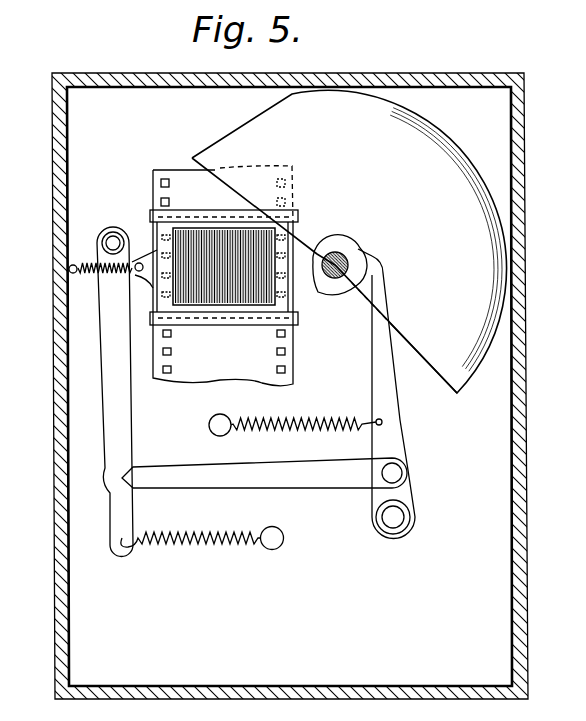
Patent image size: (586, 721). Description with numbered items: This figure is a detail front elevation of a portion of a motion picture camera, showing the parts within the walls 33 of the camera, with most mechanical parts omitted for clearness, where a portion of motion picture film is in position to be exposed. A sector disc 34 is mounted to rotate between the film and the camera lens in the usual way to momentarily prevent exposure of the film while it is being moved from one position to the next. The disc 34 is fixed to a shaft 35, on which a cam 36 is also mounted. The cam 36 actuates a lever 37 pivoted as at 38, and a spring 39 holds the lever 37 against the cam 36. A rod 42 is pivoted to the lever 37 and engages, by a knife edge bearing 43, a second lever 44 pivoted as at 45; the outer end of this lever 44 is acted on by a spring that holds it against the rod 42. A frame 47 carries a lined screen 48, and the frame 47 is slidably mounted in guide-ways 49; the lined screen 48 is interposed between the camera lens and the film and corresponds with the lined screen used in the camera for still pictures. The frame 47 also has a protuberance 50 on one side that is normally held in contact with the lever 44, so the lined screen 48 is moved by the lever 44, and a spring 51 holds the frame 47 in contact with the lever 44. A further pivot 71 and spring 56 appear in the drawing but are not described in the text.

The portion of the camera 33 is at (525, 330).
The sector disc 34 is at (463, 362).
The shaft 35 is at (340, 262).
The cam 36 is at (364, 258).
The lever 37 is at (390, 403).
The pivot of the lever 38 is at (393, 517).
The pivot pin of lever 71 is at (392, 473).
The rod 42 is at (340, 480).
The knife edge bearing 43 is at (140, 474).
The lever 44 is at (125, 437).
The pivot of the lever 45 is at (115, 240).
The frame 47 is at (283, 290).
The lined screen 48 is at (220, 292).
The guide-ways 49 is at (208, 200).
The protuberance 50 is at (150, 283).
The spring 51 is at (83, 272).
The return spring 56 is at (203, 542).
The spring 39 is at (330, 420).